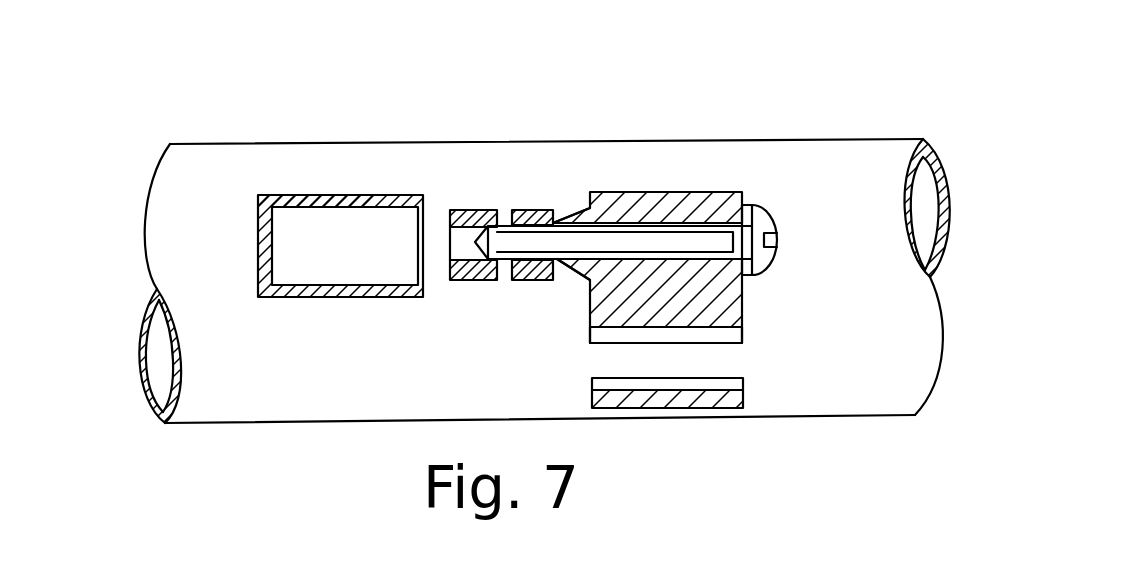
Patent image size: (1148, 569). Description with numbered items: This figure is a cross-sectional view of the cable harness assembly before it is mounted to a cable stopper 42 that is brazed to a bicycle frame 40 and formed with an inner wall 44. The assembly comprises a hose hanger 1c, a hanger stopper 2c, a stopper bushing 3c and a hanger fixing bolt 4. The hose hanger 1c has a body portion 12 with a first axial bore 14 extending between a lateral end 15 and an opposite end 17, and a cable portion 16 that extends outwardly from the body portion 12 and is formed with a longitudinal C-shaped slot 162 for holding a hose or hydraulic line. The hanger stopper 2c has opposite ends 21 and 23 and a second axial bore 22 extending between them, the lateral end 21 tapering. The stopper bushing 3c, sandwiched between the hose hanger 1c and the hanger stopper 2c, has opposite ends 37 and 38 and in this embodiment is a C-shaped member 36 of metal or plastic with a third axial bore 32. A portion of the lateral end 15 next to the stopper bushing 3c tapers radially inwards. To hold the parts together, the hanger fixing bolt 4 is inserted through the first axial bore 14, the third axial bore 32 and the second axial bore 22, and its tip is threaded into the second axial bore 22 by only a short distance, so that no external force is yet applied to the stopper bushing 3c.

The bicycle frame 40 is at (212, 160).
The cable stopper 42 is at (290, 181).
The inner wall 44 is at (346, 212).
The end of hanger stopper 23 is at (435, 220).
The second axial bore 22 is at (460, 250).
The tapering lateral end of hanger stopper 21 is at (500, 279).
The hanger stopper 2c is at (444, 223).
The end of stopper bushing 38 is at (529, 211).
The C-shaped member 36 is at (540, 200).
The third axial bore 32 is at (528, 279).
The stopper bushing 3c is at (520, 200).
The first axial bore 14 is at (619, 130).
The body portion 12 is at (673, 192).
The lateral end of hose hanger 15 is at (580, 205).
The end of stopper bushing 37 is at (565, 200).
The hose hanger 1c is at (663, 193).
The slot 162 is at (734, 358).
The end of body portion 17 is at (745, 200).
The hanger fixing bolt 4 is at (777, 213).
The cable portion 16 is at (720, 410).